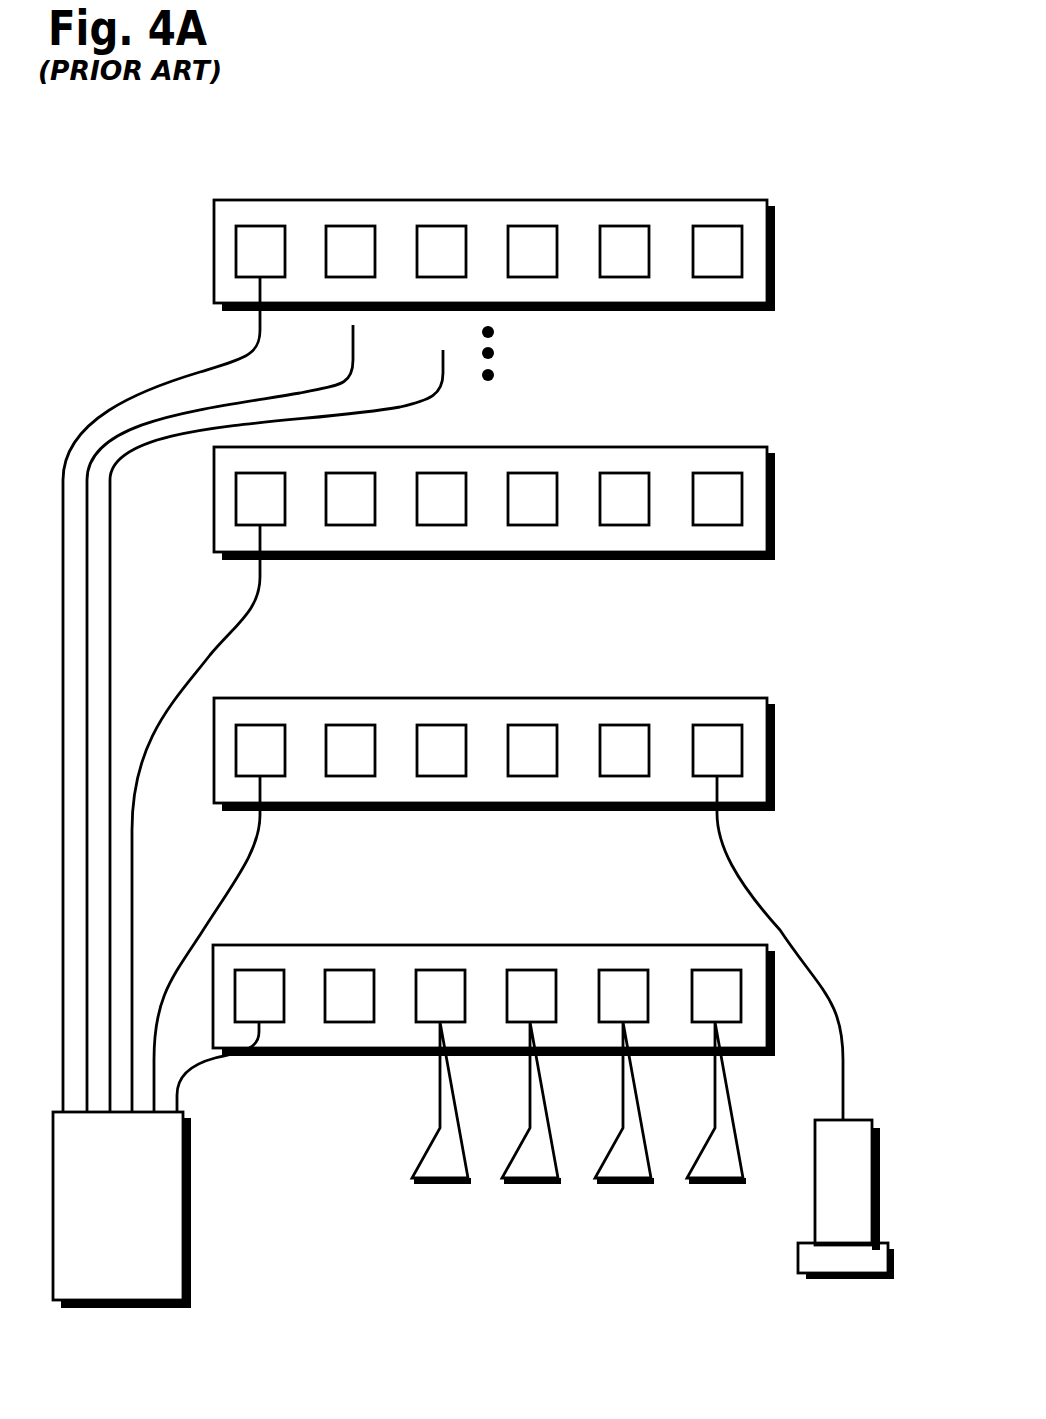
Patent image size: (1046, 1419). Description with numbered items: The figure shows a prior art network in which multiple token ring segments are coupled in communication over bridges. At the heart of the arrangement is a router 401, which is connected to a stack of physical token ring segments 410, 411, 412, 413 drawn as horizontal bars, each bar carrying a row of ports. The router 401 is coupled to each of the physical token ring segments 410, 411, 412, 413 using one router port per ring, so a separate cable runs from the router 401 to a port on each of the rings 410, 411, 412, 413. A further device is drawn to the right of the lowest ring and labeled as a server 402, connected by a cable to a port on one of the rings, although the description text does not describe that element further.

The router 401 is at (122, 1240).
The server 402 is at (845, 1229).
The physical token ring segment 410 is at (615, 945).
The physical token ring segment 411 is at (615, 698).
The physical token ring segment 412 is at (615, 447).
The physical token ring segment 413 is at (615, 200).